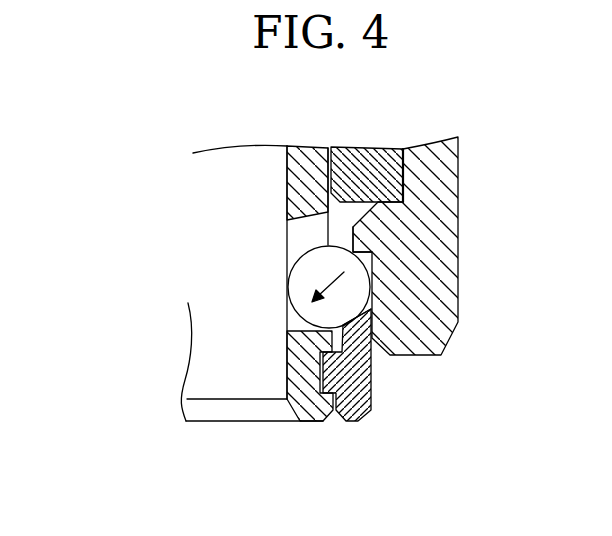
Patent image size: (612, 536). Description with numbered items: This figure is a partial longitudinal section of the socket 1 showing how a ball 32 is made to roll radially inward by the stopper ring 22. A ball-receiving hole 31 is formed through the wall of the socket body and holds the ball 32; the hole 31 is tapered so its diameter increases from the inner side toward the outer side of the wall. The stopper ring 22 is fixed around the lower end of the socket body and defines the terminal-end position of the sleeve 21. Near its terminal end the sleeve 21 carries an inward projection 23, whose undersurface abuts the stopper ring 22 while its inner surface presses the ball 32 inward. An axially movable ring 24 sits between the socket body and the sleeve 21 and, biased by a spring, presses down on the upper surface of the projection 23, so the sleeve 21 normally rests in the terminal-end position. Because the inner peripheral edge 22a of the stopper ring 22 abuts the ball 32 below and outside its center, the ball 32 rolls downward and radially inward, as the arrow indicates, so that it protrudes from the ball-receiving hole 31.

The socket 1 is at (408, 470).
The sleeve 21 is at (448, 195).
The stopper ring 22 is at (365, 397).
The inner peripheral edge 22a is at (345, 320).
The projection 23 is at (358, 238).
The ring 24 is at (366, 166).
The ball-receiving hole 31 is at (297, 234).
The ball 32 is at (292, 282).